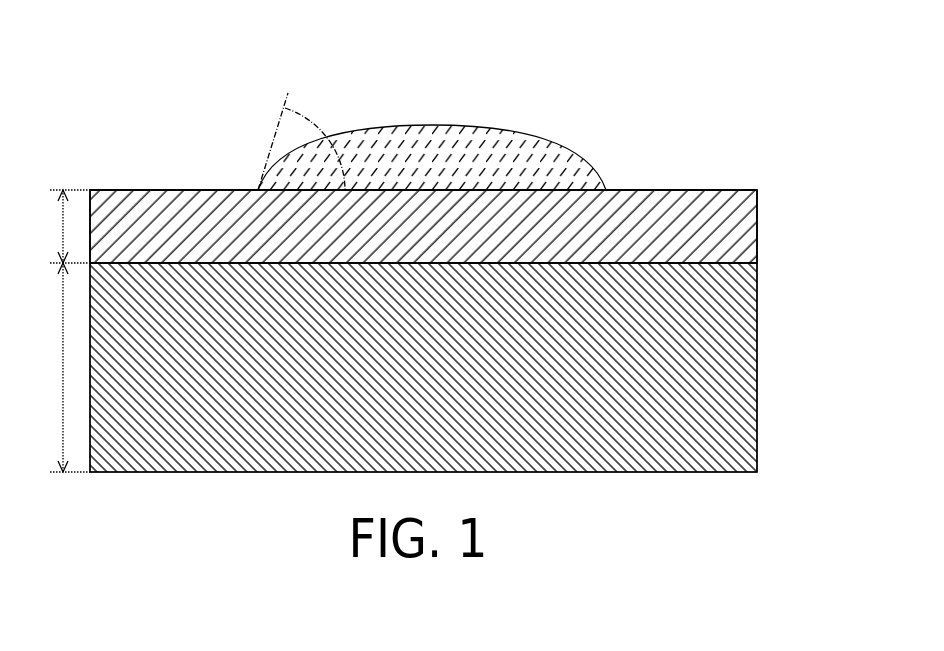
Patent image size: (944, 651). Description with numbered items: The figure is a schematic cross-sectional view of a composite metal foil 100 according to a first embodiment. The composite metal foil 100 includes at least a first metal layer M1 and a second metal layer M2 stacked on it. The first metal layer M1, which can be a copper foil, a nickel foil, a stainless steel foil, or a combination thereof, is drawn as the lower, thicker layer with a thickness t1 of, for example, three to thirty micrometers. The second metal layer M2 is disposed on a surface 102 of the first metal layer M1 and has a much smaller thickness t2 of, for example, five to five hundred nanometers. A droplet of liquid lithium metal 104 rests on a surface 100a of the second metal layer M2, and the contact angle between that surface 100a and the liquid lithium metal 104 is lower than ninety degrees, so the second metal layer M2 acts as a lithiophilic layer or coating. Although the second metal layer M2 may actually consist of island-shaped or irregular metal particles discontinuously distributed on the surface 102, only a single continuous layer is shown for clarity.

The composite metal foil 100 is at (135, 77).
The surface of the second metal layer 100a is at (165, 189).
The surface of the first metal layer 102 is at (692, 262).
The liquid lithium metal 104 is at (520, 133).
The first metal layer M1 is at (758, 363).
The second metal layer M2 is at (758, 228).
The thickness of the first metal layer t1 is at (61, 367).
The thickness of the second metal layer t2 is at (61, 226).